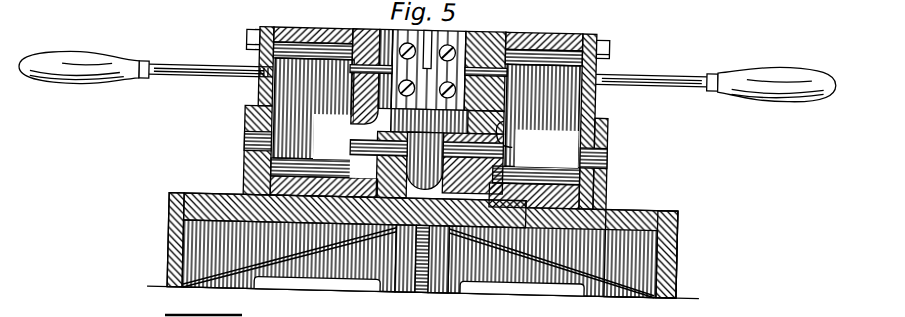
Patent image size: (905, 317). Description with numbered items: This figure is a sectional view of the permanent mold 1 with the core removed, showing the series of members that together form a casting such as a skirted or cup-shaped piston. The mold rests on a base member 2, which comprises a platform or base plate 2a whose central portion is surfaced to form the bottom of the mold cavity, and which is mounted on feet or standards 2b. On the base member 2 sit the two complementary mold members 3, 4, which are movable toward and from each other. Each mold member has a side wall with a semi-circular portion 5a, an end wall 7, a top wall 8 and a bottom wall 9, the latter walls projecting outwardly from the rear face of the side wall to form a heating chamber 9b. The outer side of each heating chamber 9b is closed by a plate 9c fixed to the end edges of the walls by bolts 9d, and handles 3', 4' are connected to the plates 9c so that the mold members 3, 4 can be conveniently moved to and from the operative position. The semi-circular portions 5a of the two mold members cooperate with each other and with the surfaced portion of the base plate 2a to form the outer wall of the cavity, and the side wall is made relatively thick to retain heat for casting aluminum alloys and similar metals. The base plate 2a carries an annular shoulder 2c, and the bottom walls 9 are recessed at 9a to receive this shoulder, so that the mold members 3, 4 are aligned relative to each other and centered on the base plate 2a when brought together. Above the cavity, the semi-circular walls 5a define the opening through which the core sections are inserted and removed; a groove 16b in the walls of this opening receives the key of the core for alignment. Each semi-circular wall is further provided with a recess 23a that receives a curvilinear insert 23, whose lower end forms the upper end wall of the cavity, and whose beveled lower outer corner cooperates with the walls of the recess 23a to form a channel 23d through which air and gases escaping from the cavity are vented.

The permanent mold 1 is at (427, 107).
The base member 2 is at (426, 234).
The base plate 2a is at (638, 206).
The feet 2b is at (170, 259).
The annular shoulder 2c is at (302, 203).
The complementary mold member 3 is at (315, 89).
The handle 3' is at (146, 54).
The complementary mold member 4 is at (537, 95).
The handle 4' is at (715, 70).
The semi-circular portion 5a is at (352, 117).
The end wall 7 is at (416, 203).
The top wall 8 is at (289, 31).
The bottom wall 9 is at (423, 105).
The recess 9a is at (321, 200).
The heating chamber 9b is at (446, 141).
The plate 9c is at (249, 121).
The bolts 9d is at (242, 42).
The groove 16b is at (447, 28).
The insert 23 is at (379, 33).
The recess 23a is at (520, 31).
The channel 23d is at (479, 111).